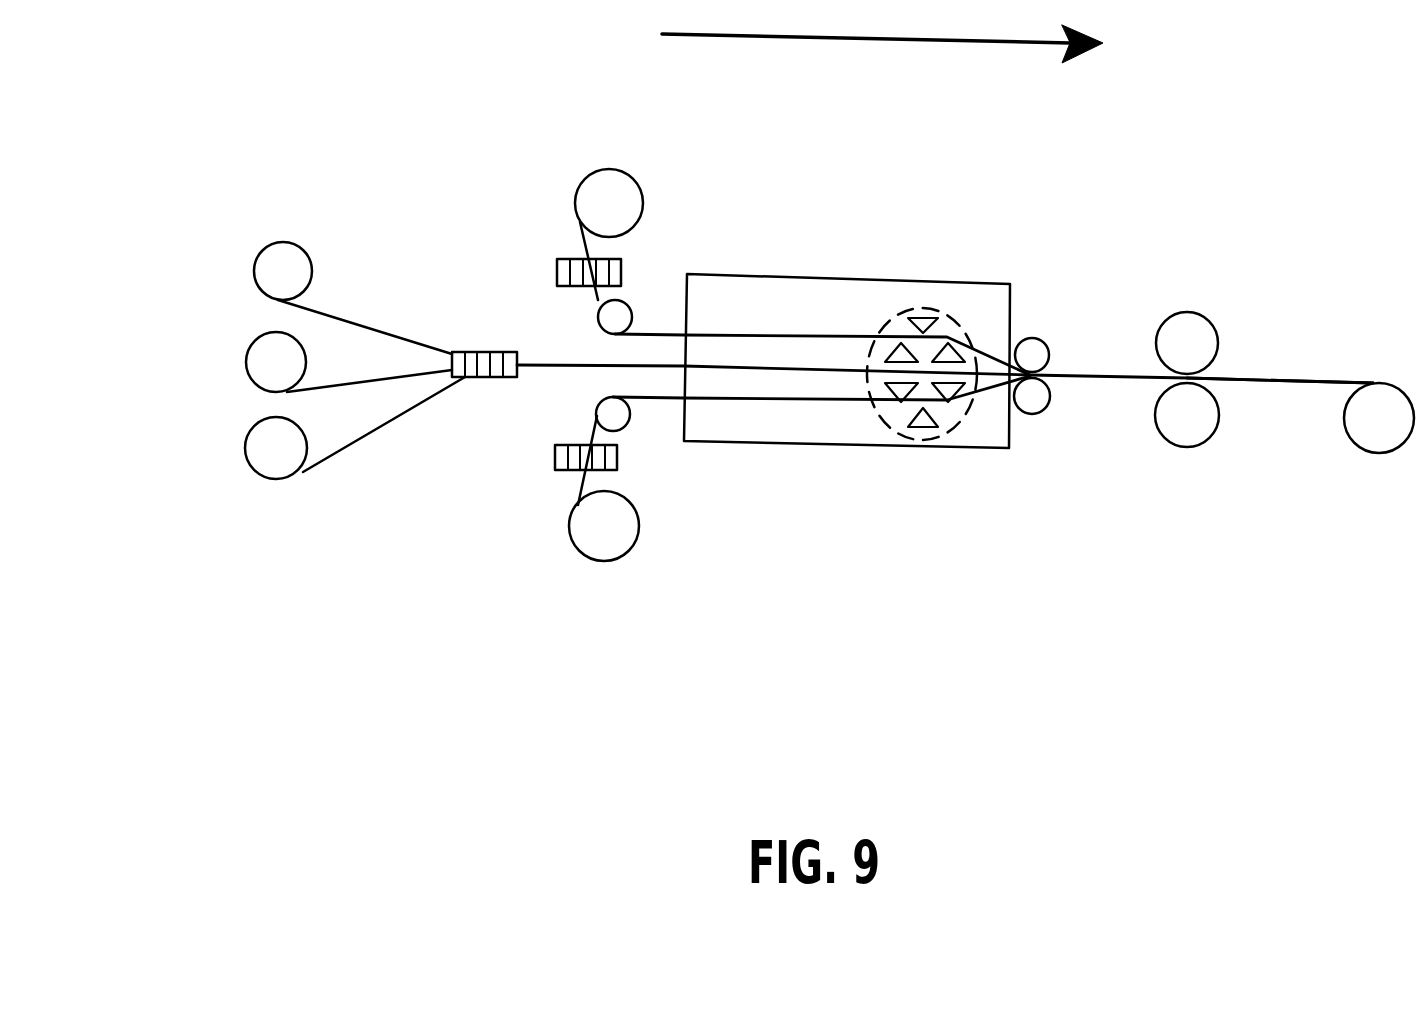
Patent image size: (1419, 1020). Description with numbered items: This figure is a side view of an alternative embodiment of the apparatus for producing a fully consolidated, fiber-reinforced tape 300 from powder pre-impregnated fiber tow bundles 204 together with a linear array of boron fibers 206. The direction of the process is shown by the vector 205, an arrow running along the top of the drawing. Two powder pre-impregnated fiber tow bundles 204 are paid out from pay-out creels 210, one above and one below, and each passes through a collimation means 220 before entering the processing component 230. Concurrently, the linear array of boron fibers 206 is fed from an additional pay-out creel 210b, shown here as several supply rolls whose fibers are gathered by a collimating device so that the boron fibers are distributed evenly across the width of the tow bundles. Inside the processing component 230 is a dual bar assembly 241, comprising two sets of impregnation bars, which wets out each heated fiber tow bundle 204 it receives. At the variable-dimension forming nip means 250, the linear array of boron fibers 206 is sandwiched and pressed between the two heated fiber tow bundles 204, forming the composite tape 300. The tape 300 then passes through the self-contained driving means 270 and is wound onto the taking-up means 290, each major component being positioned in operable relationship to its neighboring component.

The powder pre-impregnated fiber tow bundle 204 is at (804, 367).
The vector 205 is at (882, 61).
The array of boron fibers 206 is at (945, 299).
The pay-out creel 210 is at (561, 362).
The additional pay-out creel 210b is at (332, 339).
The collimation means 220 is at (540, 363).
The processing component 230 is at (847, 396).
The dual bar assembly 241 is at (975, 332).
The variable-dimension forming nip means 250 is at (1101, 319).
The self-contained driving means 270 is at (1149, 406).
The taking-up means 290 is at (1339, 444).
The fully consolidated fiber-reinforced tape 300 is at (1302, 305).